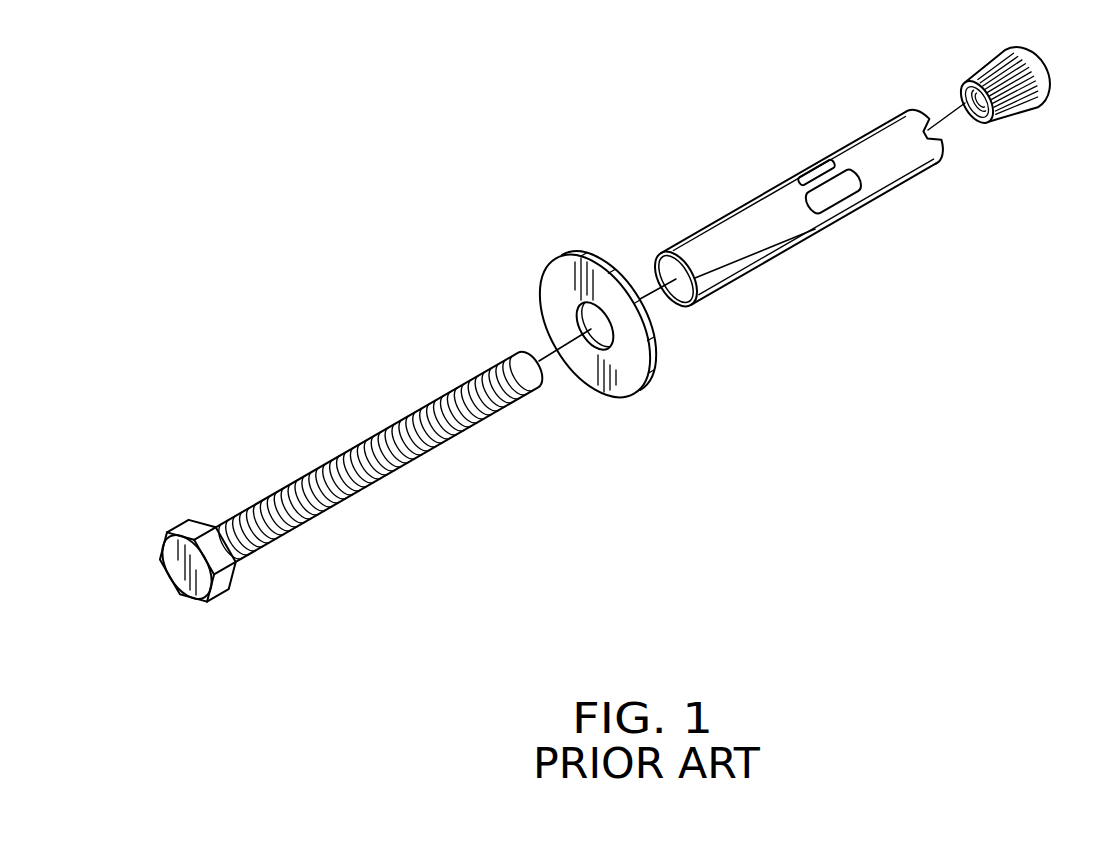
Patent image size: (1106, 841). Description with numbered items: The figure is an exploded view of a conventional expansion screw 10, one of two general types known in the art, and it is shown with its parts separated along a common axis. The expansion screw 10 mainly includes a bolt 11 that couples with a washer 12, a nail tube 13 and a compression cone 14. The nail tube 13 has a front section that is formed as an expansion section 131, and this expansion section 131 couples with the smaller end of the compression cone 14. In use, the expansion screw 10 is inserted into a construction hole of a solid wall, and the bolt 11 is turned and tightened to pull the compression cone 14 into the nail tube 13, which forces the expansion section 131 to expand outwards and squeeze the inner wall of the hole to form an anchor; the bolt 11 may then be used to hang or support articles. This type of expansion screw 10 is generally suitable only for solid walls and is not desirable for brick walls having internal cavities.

The expansion screw 10 is at (483, 240).
The bolt 11 is at (352, 500).
The washer 12 is at (618, 380).
The nail tube 13 is at (766, 209).
The expansion section 131 is at (877, 143).
The compression cone 14 is at (1012, 107).